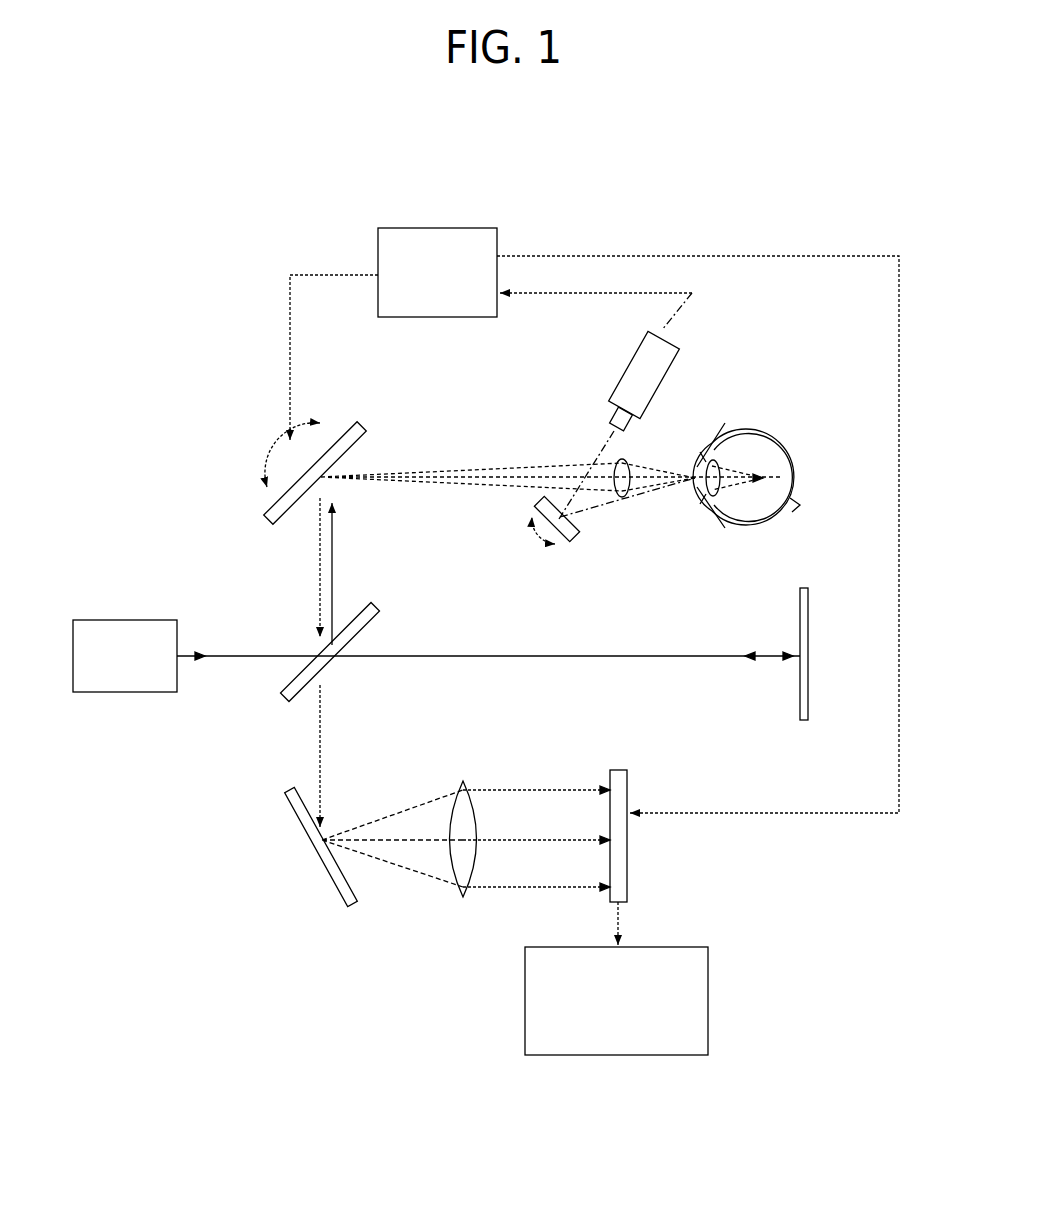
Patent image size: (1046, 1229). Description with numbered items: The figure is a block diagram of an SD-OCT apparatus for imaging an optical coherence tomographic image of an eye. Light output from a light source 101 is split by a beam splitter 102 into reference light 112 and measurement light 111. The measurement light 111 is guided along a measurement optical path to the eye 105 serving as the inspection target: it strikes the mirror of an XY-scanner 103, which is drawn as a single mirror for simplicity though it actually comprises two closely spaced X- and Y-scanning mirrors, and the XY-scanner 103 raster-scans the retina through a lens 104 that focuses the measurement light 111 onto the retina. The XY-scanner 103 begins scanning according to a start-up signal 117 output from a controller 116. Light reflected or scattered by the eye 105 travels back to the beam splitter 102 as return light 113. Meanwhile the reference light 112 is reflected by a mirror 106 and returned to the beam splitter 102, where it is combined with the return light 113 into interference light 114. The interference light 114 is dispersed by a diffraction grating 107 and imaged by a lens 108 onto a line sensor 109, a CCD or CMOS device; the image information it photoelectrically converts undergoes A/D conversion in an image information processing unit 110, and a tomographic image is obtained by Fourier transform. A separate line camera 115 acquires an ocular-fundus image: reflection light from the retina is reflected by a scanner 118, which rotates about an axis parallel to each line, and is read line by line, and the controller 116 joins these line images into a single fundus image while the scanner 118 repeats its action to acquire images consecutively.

The light source 101 is at (120, 620).
The beam splitter 102 is at (378, 608).
The XY-scanner 103 is at (360, 424).
The lens 104 is at (625, 459).
The eye 105 is at (765, 437).
The mirror 106 is at (805, 588).
The diffraction grating 107 is at (288, 791).
The lens 108 is at (463, 782).
The line sensor 109 is at (617, 770).
The image information processing unit 110 is at (708, 1000).
The measurement light 111 is at (332, 528).
The reference light 112 is at (482, 655).
The return light 113 is at (320, 576).
The interference light 114 is at (320, 710).
The line camera 115 is at (680, 358).
The controller 116 is at (430, 228).
The start-up signal 117 is at (290, 355).
The scanner 118 is at (578, 540).